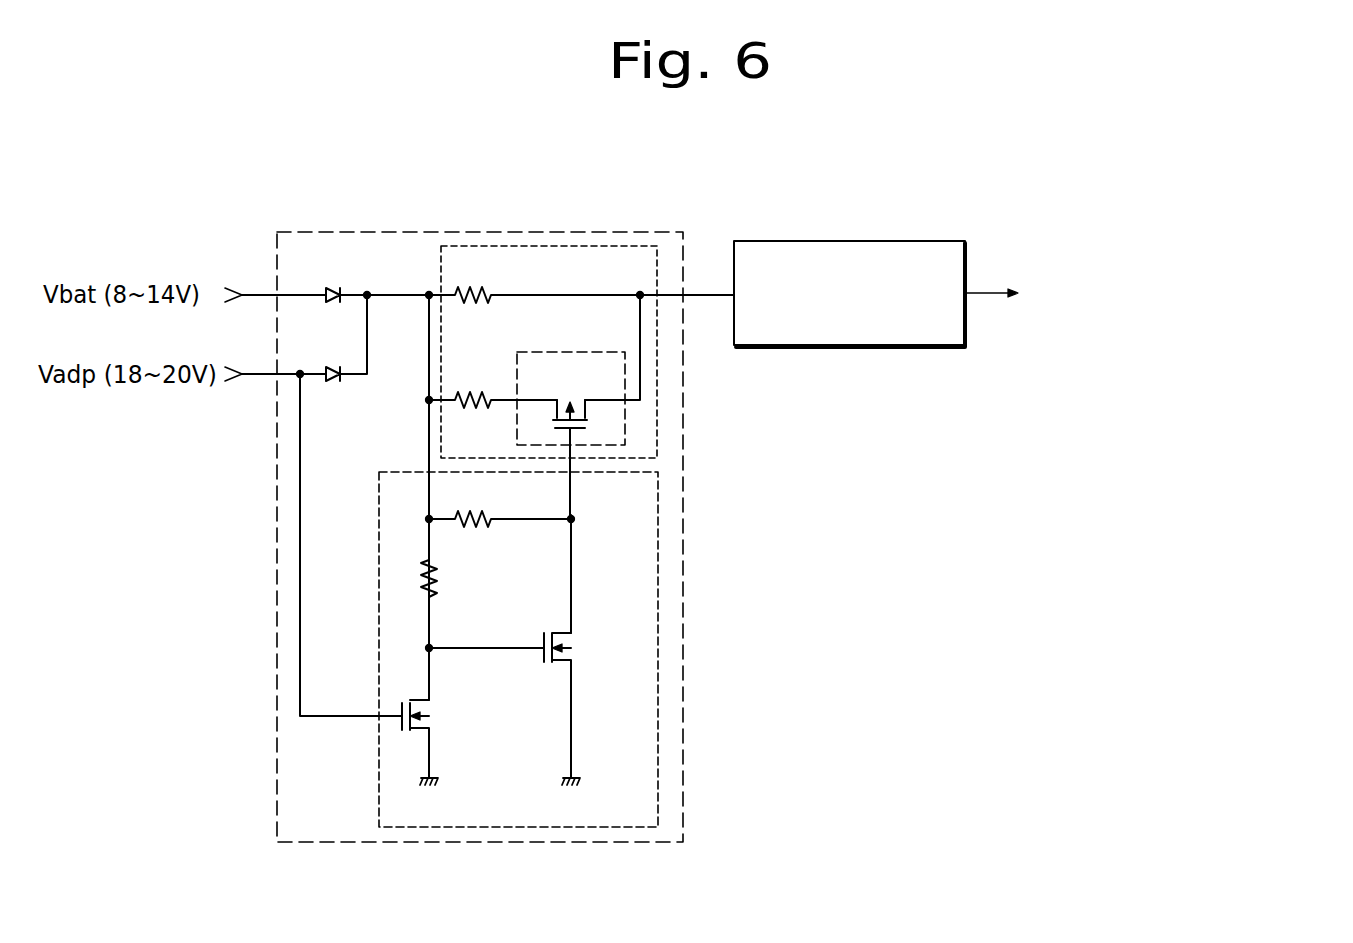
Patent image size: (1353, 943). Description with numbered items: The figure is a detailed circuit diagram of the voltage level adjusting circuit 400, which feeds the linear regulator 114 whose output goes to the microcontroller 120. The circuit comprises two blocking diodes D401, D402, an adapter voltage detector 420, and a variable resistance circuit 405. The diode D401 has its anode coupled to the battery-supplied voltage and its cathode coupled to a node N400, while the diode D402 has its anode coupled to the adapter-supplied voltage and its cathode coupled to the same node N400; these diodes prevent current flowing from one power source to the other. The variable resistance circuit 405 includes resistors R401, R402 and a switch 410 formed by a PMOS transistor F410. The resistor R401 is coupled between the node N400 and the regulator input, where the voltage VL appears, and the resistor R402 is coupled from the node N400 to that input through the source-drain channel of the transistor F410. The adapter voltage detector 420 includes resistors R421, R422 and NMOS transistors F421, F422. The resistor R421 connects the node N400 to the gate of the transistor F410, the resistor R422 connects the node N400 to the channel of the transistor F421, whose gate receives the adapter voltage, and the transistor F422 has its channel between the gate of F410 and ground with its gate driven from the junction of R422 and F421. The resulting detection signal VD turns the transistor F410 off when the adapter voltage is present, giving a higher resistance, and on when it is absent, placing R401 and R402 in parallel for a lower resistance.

The voltage level adjusting circuit 400 is at (503, 232).
The variable resistance circuit 405 is at (612, 246).
The switch 410 is at (572, 352).
The adapter voltage detector 420 is at (379, 615).
The linear regulator 114 is at (895, 241).
The microcontroller 120 is at (1158, 294).
The diode D401 is at (331, 280).
The diode D402 is at (331, 358).
The node N400 is at (404, 280).
The resistor R401 is at (534, 280).
The resistor R402 is at (493, 385).
The PMOS transistor F410 is at (571, 445).
The resistor R421 is at (500, 504).
The resistor R422 is at (455, 578).
The NMOS transistor F421 is at (443, 738).
The NMOS transistor F422 is at (585, 705).
The regulator input voltage VL is at (687, 279).
The detection signal VD is at (588, 501).